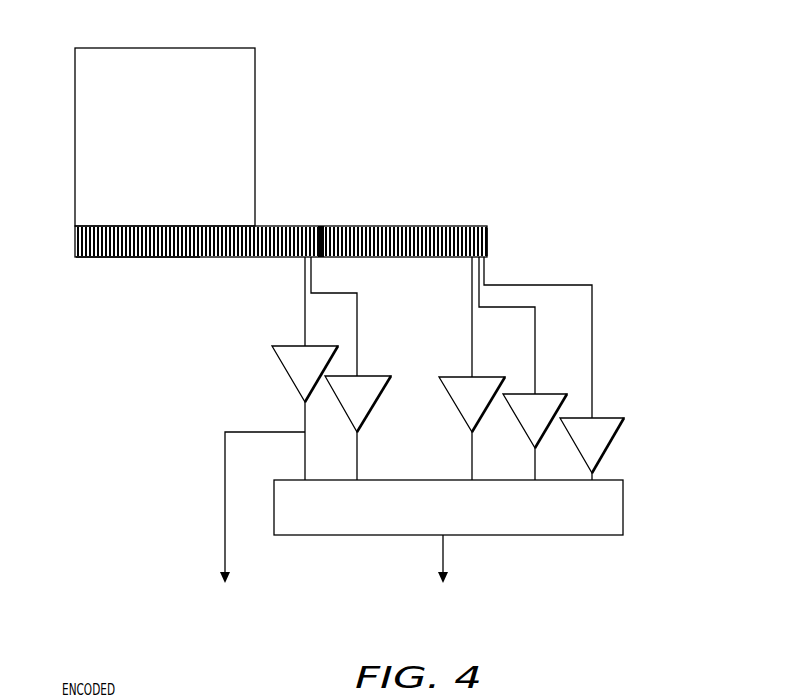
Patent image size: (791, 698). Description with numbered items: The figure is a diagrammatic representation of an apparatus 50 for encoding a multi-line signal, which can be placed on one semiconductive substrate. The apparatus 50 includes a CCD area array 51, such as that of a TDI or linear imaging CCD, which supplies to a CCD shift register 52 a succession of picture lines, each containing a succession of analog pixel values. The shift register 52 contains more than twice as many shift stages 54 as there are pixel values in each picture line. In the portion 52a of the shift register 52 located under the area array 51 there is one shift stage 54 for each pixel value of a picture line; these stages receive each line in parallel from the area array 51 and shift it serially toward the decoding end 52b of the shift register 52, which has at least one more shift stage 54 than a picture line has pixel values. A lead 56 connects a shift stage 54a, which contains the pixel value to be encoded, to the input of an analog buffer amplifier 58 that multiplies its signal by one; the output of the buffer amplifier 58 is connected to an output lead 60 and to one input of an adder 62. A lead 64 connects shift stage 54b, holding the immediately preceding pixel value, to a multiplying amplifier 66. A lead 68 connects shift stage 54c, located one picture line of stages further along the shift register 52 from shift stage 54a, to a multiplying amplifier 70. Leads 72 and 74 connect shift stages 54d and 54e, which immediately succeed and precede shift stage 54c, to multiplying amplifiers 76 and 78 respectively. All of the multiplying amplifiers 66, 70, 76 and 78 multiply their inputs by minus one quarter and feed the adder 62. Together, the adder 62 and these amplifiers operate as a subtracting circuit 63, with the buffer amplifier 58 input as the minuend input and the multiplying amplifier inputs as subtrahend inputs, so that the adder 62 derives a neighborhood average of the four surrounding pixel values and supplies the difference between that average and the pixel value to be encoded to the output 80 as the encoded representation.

The apparatus 50 is at (415, 40).
The CCD area array 51 is at (242, 48).
The CCD shift register 52 is at (387, 226).
The portion of the shift register 52a is at (164, 257).
The decoding end of the shift register 52b is at (487, 240).
The shift stages 54 is at (76, 257).
The shift stage 54a is at (305, 226).
The shift stage 54b is at (311, 226).
The shift stage 54c is at (478, 226).
The shift stage 54d is at (473, 226).
The shift stage 54e is at (483, 226).
The lead 56 is at (305, 288).
The analog buffer amplifier 58 is at (280, 346).
The output lead 60 is at (225, 550).
The adder 62 is at (360, 535).
The subtracting circuit 63 is at (645, 462).
The lead 64 is at (343, 293).
The multiplying amplifier 66 is at (368, 376).
The lead 68 is at (527, 307).
The multiplying amplifier 70 is at (541, 394).
The lead 72 is at (472, 318).
The lead 74 is at (563, 285).
The multiplying amplifier 76 is at (452, 377).
The multiplying amplifier 78 is at (602, 418).
The output 80 is at (443, 553).